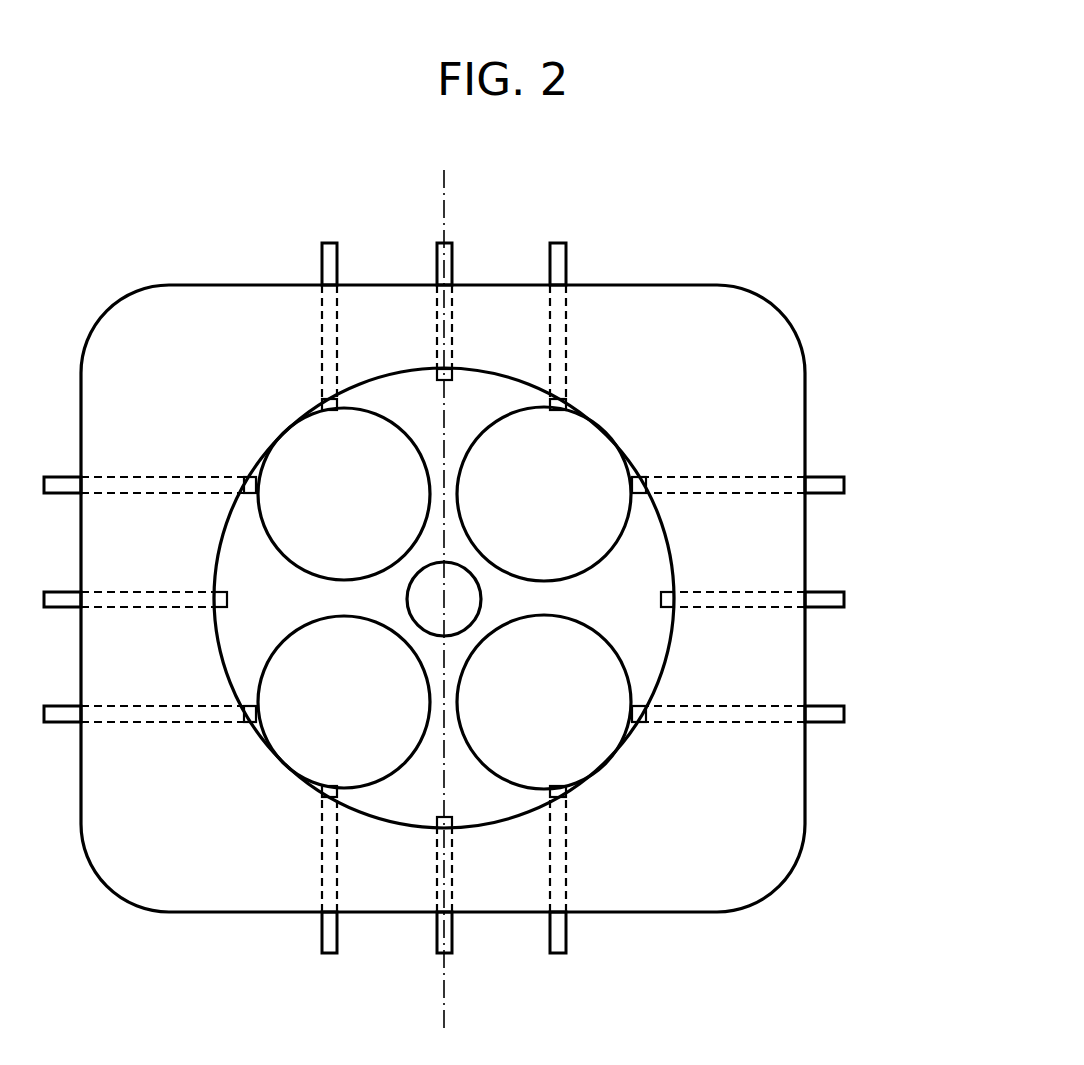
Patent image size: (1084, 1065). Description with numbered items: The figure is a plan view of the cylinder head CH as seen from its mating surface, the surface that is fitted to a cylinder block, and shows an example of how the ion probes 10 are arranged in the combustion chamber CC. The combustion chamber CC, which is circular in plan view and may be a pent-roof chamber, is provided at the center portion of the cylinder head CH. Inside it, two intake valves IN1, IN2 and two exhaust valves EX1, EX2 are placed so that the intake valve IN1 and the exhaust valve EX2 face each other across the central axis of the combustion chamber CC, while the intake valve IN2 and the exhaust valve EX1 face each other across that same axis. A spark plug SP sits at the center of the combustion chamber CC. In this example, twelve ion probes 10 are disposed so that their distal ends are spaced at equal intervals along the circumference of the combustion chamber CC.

The cylinder head CH is at (805, 383).
The ion probe 10 is at (844, 484).
The combustion chamber CC is at (475, 430).
The intake valve IN1 is at (374, 512).
The intake valve IN2 is at (374, 722).
The exhaust valve EX1 is at (580, 512).
The exhaust valve EX2 is at (580, 722).
The spark plug SP is at (468, 612).